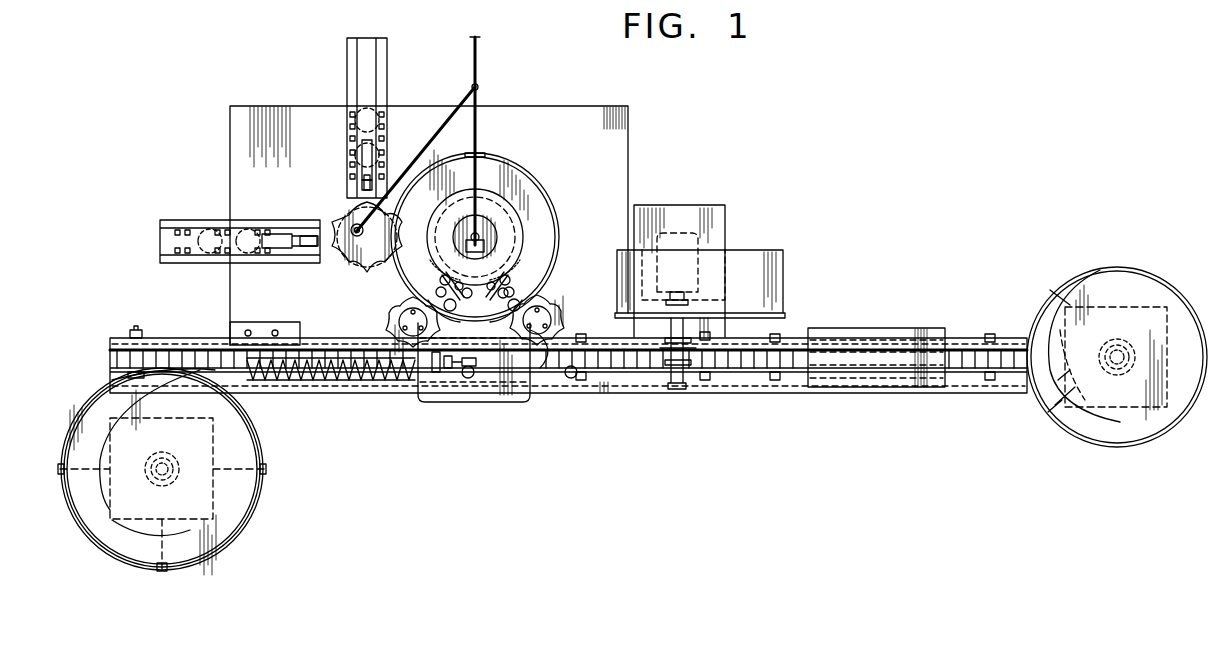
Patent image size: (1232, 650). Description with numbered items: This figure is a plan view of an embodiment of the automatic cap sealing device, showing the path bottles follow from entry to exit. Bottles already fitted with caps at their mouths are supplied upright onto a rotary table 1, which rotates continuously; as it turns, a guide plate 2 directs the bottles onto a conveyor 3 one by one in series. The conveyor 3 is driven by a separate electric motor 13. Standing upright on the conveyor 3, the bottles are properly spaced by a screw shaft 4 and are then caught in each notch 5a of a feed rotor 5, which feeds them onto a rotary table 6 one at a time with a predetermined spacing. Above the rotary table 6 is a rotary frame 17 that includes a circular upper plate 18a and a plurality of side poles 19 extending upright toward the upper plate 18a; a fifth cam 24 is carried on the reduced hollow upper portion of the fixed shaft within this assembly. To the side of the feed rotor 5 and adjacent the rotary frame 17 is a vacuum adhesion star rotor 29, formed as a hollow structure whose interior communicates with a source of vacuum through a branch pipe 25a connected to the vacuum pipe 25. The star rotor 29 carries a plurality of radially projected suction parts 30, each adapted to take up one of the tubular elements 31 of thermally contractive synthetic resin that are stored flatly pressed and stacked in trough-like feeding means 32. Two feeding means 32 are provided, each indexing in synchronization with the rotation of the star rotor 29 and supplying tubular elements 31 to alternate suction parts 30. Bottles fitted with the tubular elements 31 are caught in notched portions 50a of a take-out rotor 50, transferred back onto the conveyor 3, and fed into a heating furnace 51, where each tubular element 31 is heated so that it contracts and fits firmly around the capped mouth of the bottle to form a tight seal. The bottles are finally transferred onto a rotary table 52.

The rotary table 1 is at (242, 434).
The guide plate 2 is at (100, 420).
The conveyor 3 is at (190, 352).
The screw shaft 4 is at (346, 386).
The feed rotor 5 is at (388, 322).
The notch 5a is at (414, 388).
The rotary table 6 is at (556, 216).
The electric motor 13 is at (700, 246).
The rotary frame 17 is at (556, 238).
The circular upper plate 18a is at (536, 188).
The side poles 19 is at (486, 158).
The fifth cam 24 is at (512, 242).
The vacuum pipe 25 is at (478, 120).
The branch pipe 25a is at (450, 117).
The vacuum adhesion star rotor 29 is at (353, 224).
The suction parts 30 is at (336, 225).
The tubular elements 31 is at (352, 183).
The feeding means 32 is at (358, 70).
The take-out rotor 50 is at (560, 310).
The notched portions 50a is at (540, 388).
The heating furnace 51 is at (871, 331).
The rotary table 52 is at (1100, 285).